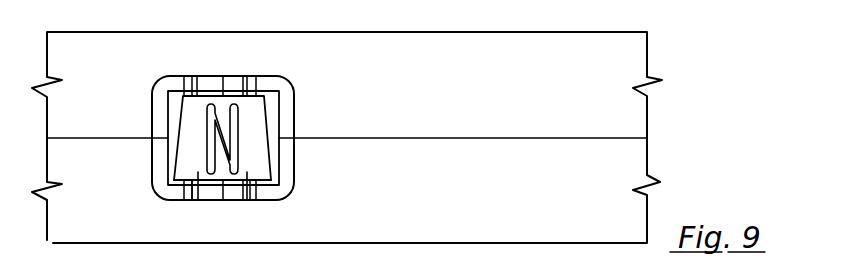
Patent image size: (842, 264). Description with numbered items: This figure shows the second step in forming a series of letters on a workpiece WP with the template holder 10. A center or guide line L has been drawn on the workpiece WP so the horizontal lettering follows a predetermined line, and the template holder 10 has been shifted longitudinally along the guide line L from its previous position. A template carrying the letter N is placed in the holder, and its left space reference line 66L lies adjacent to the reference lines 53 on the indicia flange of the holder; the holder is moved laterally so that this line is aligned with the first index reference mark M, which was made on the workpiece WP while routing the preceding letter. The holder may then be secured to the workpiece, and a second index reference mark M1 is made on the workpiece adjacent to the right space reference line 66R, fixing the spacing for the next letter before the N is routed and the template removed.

The workpiece WP is at (471, 32).
The guide line L is at (432, 138).
The template holder 10 is at (296, 85).
The first index reference mark M is at (198, 200).
The second index reference mark M1 is at (248, 200).
The left space reference line 66L is at (193, 175).
The right space reference line 66R is at (247, 176).
The reference lines 53 is at (192, 200).